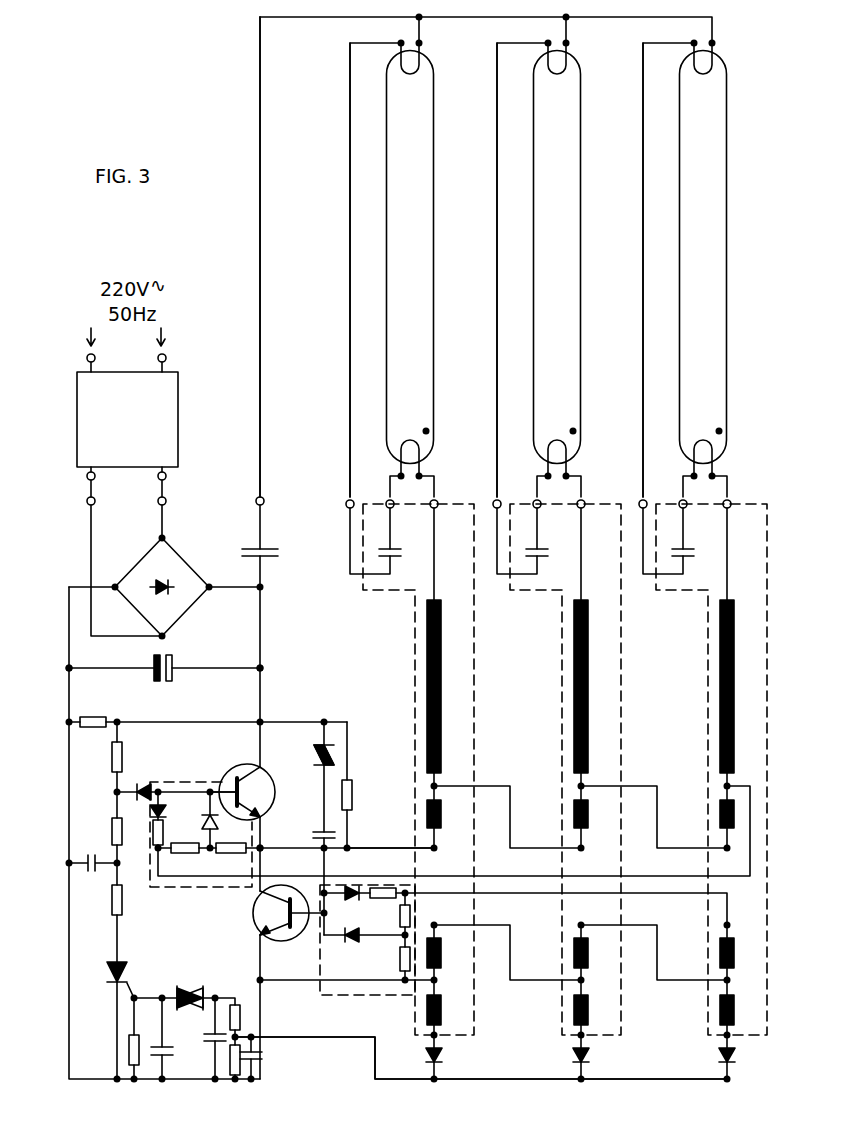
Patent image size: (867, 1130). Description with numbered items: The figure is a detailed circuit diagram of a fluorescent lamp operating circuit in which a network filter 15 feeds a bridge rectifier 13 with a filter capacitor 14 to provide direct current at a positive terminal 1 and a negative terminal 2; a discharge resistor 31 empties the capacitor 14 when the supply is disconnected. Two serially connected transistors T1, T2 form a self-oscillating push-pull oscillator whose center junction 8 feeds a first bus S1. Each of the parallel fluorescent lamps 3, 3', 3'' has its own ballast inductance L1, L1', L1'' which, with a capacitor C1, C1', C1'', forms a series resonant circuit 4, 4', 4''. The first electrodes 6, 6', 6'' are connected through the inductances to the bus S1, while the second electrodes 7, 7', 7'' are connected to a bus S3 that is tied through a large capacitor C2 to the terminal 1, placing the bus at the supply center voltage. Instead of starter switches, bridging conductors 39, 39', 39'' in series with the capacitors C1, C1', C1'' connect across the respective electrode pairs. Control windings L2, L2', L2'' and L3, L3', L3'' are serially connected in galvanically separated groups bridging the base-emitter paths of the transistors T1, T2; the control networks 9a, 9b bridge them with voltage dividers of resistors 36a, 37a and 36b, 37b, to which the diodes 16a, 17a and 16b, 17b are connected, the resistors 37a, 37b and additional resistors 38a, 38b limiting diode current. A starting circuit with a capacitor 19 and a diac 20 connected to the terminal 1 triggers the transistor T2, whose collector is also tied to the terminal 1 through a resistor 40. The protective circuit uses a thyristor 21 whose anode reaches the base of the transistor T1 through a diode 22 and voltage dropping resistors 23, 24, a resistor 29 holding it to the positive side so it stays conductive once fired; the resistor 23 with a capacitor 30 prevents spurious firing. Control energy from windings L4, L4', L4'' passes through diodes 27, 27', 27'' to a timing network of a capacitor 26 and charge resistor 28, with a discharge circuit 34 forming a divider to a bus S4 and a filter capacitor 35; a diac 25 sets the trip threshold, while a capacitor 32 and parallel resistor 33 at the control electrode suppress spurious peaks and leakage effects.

The positive terminal 1 is at (264, 668).
The negative terminal 2 is at (66, 668).
The fluorescent lamp 3 is at (418, 256).
The fluorescent lamp 3' is at (568, 256).
The fluorescent lamp 3'' is at (716, 256).
The series resonant circuit 4 is at (429, 769).
The series resonant circuit 4' is at (578, 769).
The series resonant circuit 4'' is at (727, 769).
The first electrode 6 is at (414, 448).
The first electrode 6' is at (561, 448).
The first electrode 6'' is at (707, 448).
The second electrode 7 is at (410, 73).
The second electrode 7' is at (557, 73).
The second electrode 7'' is at (703, 73).
The center junction 8 is at (265, 845).
The control network 9a is at (204, 887).
The control network 9b is at (362, 995).
The bridge rectifier 13 is at (199, 600).
The filter capacitor 14 is at (176, 662).
The network filter 15 is at (177, 437).
The diode 16a is at (205, 800).
The diode 16b is at (348, 946).
The diode 17a is at (164, 796).
The diode 17b is at (347, 898).
The capacitor 19 is at (322, 832).
The diac 20 is at (311, 752).
The thyristor 21 is at (106, 973).
The diode 22 is at (141, 780).
The voltage dropping resistor 23 is at (106, 831).
The voltage dropping resistor 24 is at (130, 900).
The diac 25 is at (190, 988).
The capacitor 26 is at (214, 1041).
The diode 27 is at (448, 1055).
The diode 27' is at (597, 1055).
The diode 27'' is at (746, 1055).
The charge resistor 28 is at (248, 1017).
The resistor 29 is at (106, 757).
The capacitor 30 is at (90, 868).
The discharge resistor 31 is at (94, 710).
The capacitor 32 is at (171, 1038).
The resistor 33 is at (141, 1045).
The discharge circuit 34 is at (232, 1072).
The filter capacitor 35 is at (257, 1058).
The resistor 36a is at (235, 860).
The resistor 36b is at (390, 956).
The resistor 37a is at (189, 860).
The resistor 37b is at (391, 914).
The current limiting resistor 38a is at (178, 832).
The current limiting resistor 38b is at (390, 888).
The bridging conductor 39 is at (338, 270).
The bridging conductor 39' is at (482, 270).
The bridging conductor 39'' is at (629, 270).
The resistor 40 is at (360, 795).
The capacitor C1 is at (399, 543).
The capacitor C1' is at (549, 543).
The capacitor C1'' is at (697, 543).
The capacitor C2 is at (266, 540).
The inductance L1 is at (411, 686).
The inductance L1' is at (555, 686).
The inductance L1'' is at (699, 686).
The control winding L2 is at (448, 814).
The control winding L2' is at (597, 814).
The control winding L2'' is at (761, 814).
The control winding L3 is at (448, 953).
The control winding L3' is at (598, 953).
The control winding L3'' is at (761, 953).
The control winding L4 is at (448, 1010).
The control winding L4' is at (598, 1010).
The control winding L4'' is at (761, 1009).
The first bus S1 is at (375, 844).
The bus S3 is at (260, 215).
The bus S4 is at (331, 1040).
The transistor T1 is at (242, 781).
The transistor T2 is at (275, 913).